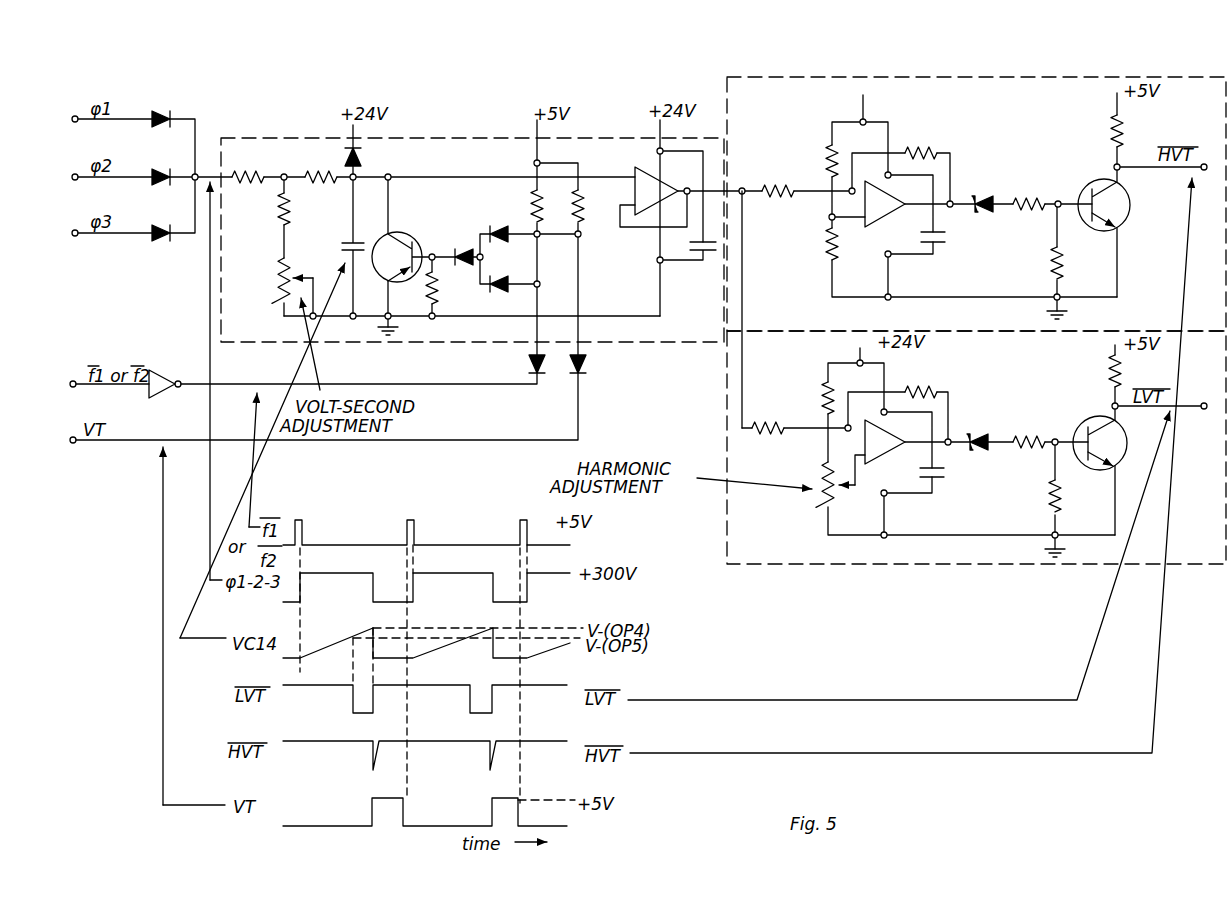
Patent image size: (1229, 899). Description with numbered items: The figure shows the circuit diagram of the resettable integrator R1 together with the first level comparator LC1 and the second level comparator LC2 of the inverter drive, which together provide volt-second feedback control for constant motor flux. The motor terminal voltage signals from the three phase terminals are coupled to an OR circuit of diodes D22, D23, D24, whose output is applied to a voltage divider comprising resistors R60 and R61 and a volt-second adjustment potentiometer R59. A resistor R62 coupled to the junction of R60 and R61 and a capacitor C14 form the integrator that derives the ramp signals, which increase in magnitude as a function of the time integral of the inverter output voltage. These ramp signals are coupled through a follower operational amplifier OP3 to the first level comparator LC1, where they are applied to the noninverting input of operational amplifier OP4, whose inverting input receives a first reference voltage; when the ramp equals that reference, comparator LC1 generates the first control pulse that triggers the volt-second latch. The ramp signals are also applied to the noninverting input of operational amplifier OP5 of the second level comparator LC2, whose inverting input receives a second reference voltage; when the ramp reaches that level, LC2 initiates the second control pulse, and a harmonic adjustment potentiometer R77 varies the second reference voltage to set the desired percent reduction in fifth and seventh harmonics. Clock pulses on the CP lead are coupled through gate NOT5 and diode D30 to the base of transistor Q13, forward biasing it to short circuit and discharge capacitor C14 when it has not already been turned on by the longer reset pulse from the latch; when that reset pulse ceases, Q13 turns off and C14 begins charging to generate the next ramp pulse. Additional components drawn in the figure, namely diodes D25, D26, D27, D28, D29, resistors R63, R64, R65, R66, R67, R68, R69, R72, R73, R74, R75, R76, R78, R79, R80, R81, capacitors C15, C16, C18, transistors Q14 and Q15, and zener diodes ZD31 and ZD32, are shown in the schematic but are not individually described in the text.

The diode D22 is at (176, 99).
The diode D23 is at (172, 157).
The diode D24 is at (172, 214).
The diode D25 is at (366, 160).
The diode D26 is at (464, 250).
The diode D27 is at (510, 223).
The diode D28 is at (513, 296).
The diode D29 is at (588, 362).
The diode D30 is at (526, 362).
The resettable integrator R1 is at (467, 136).
The volt-second adjustment potentiometer R59 is at (278, 281).
The resistor R60 is at (247, 163).
The resistor R61 is at (276, 213).
The resistor R62 is at (320, 163).
The resistor R63 is at (436, 319).
The resistor R64 is at (530, 205).
The resistor R65 is at (584, 233).
The capacitor C14 is at (346, 241).
The capacitor C15 is at (700, 262).
The capacitor C16 is at (948, 244).
The capacitor C18 is at (934, 490).
The transistor Q13 is at (405, 233).
The transistor Q14 is at (1130, 205).
The transistor Q15 is at (1080, 425).
The follower operational amplifier OP3 is at (656, 191).
The operational amplifier OP4 is at (885, 204).
The operational amplifier OP5 is at (885, 443).
The first level comparator LC1 is at (985, 77).
The second level comparator LC2 is at (928, 566).
The resistor R66 is at (768, 440).
The resistor R67 is at (768, 185).
The resistor R68 is at (822, 254).
The resistor R69 is at (940, 150).
The resistor R72 is at (828, 147).
The resistor R73 is at (1026, 221).
The resistor R74 is at (1064, 276).
The resistor R75 is at (1125, 123).
The resistor R76 is at (824, 398).
The harmonic adjustment potentiometer R77 is at (819, 507).
The resistor R78 is at (920, 390).
The resistor R79 is at (1018, 455).
The resistor R80 is at (1050, 497).
The resistor R81 is at (1105, 376).
The zener diode ZD31 is at (992, 187).
The zener diode ZD32 is at (987, 423).
The gate NOT5 is at (162, 362).
The CP lead CP is at (103, 388).